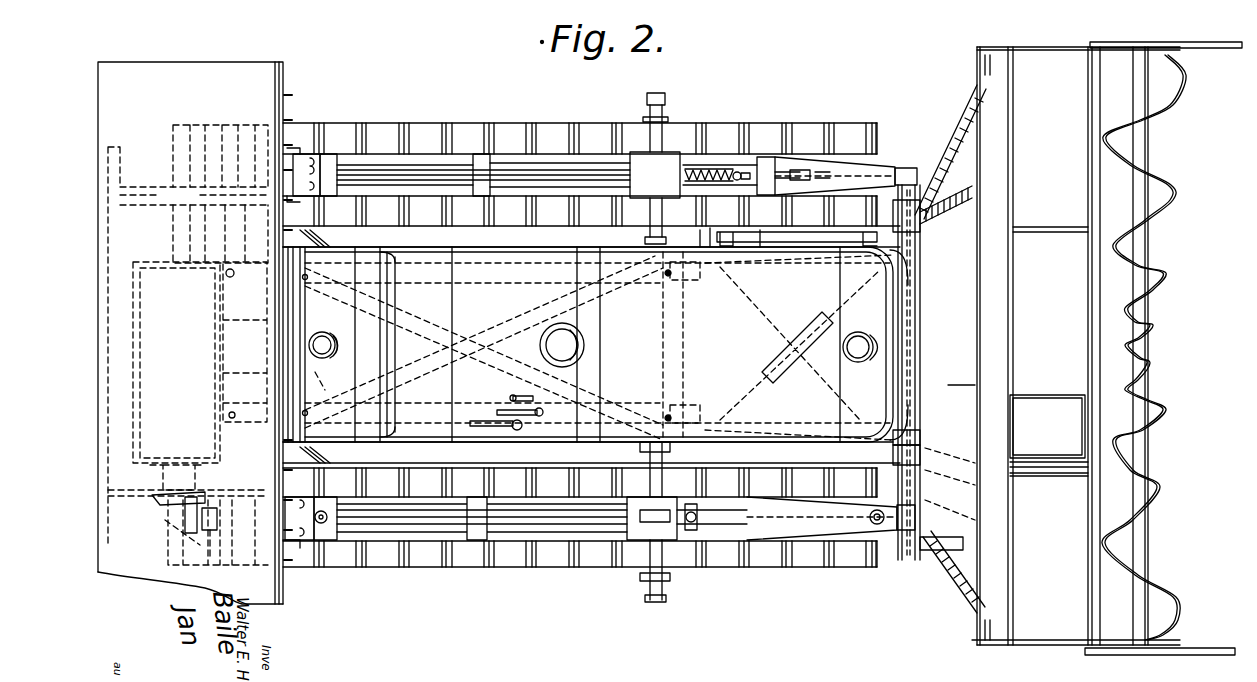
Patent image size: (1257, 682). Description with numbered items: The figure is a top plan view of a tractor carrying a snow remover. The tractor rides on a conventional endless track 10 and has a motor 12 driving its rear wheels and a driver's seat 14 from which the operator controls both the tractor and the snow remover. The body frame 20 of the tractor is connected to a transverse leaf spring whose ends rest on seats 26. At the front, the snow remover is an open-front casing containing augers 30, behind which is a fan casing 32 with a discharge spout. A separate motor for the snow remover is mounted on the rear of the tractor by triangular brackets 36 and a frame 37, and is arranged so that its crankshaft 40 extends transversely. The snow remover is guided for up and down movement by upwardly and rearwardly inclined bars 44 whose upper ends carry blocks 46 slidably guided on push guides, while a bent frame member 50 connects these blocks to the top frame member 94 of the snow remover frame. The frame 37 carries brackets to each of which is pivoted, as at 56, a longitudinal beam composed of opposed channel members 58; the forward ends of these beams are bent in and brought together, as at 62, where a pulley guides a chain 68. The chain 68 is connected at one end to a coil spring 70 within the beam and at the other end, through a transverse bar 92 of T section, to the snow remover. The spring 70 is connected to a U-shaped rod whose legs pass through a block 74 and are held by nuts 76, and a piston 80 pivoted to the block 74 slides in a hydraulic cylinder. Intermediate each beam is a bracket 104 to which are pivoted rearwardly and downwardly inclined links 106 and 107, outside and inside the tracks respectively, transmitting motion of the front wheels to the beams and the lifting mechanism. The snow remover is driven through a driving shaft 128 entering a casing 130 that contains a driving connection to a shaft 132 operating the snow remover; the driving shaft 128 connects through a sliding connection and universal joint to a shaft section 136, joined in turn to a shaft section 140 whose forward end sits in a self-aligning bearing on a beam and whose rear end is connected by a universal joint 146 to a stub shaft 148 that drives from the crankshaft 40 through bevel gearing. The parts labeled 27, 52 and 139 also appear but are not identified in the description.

The endless track 10 is at (410, 140).
The motor 12 is at (799, 347).
The driver's seat 14 is at (437, 307).
The body frame 20 is at (540, 433).
The seats 26 is at (977, 87).
The cross plank 27 is at (813, 232).
The augers 30 is at (1133, 418).
The fan casing 32 is at (1067, 322).
The triangular brackets 36 is at (153, 500).
The motor frame 37 is at (117, 440).
The crankshaft 40 is at (180, 465).
The inclined bars 44 is at (950, 208).
The blocks 46 is at (880, 213).
The bent frame member 50 is at (960, 578).
The bearing opening 52 is at (347, 275).
The pivot 56 is at (195, 333).
The channel members 58 is at (790, 165).
The bent-in forward ends 62 is at (327, 413).
The chain 68 is at (815, 172).
The coil spring 70 is at (712, 170).
The block 74 is at (330, 165).
The nuts 76 is at (305, 160).
The piston 80 is at (350, 178).
The transverse bar 92 is at (897, 500).
The top frame member 94 is at (990, 523).
The bracket 104 is at (660, 130).
The outside link 106 is at (617, 577).
The inside link 107 is at (617, 460).
The driving shaft 128 is at (907, 557).
The casing 130 is at (943, 387).
The shaft 132 is at (977, 327).
The shaft section 136 is at (763, 520).
The latch link 139 is at (175, 532).
The shaft section 140 is at (527, 525).
The universal joint 146 is at (297, 530).
The stub shaft 148 is at (660, 530).